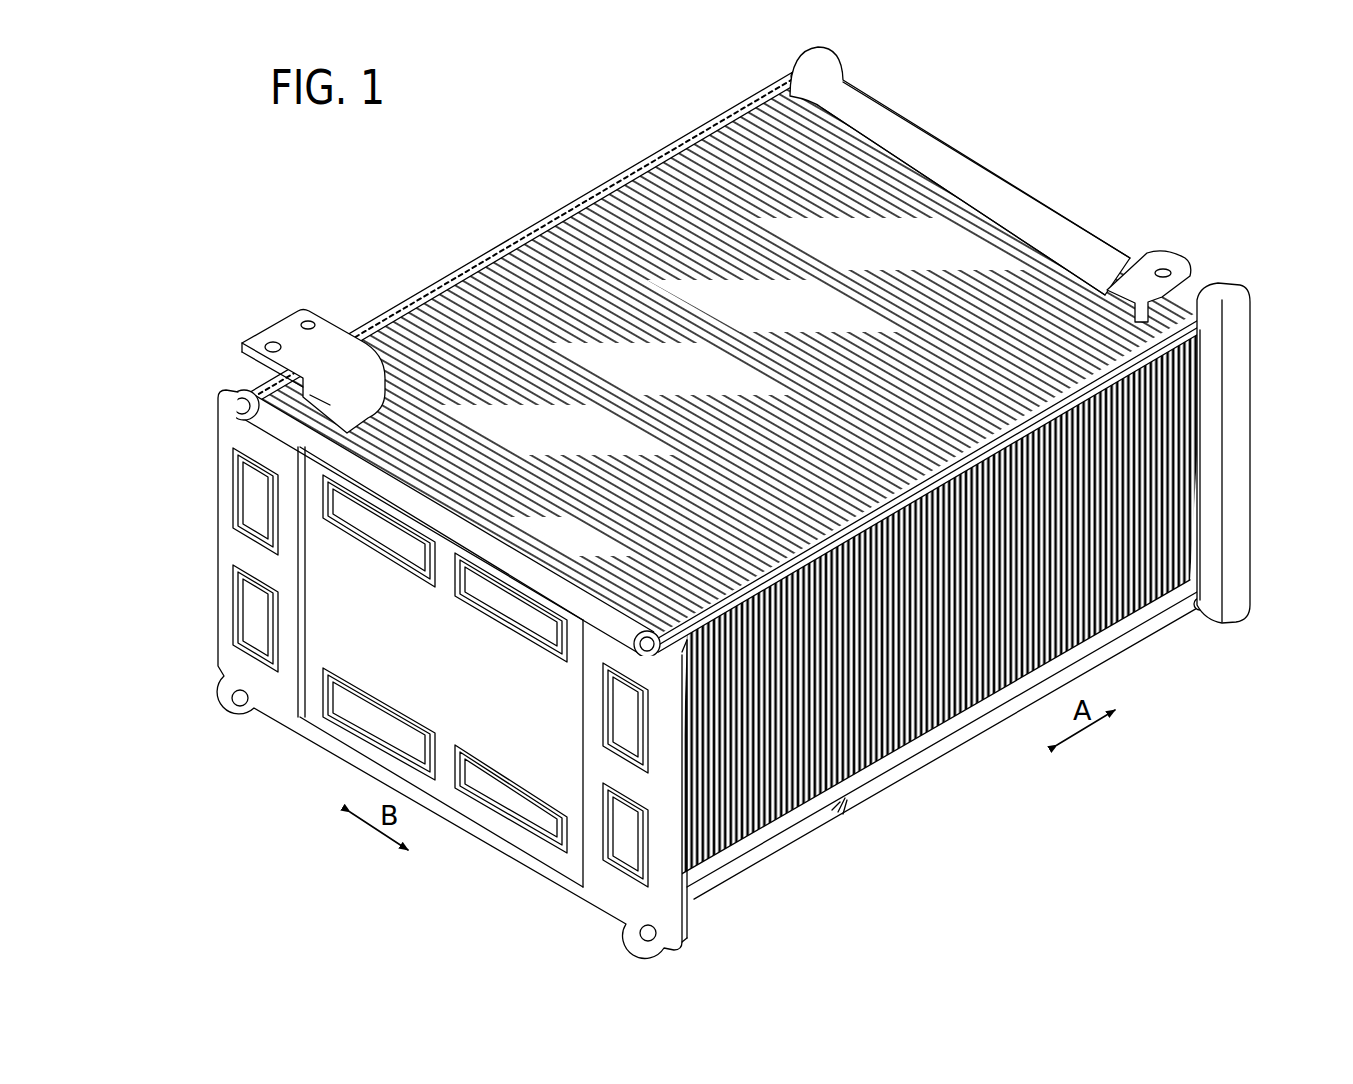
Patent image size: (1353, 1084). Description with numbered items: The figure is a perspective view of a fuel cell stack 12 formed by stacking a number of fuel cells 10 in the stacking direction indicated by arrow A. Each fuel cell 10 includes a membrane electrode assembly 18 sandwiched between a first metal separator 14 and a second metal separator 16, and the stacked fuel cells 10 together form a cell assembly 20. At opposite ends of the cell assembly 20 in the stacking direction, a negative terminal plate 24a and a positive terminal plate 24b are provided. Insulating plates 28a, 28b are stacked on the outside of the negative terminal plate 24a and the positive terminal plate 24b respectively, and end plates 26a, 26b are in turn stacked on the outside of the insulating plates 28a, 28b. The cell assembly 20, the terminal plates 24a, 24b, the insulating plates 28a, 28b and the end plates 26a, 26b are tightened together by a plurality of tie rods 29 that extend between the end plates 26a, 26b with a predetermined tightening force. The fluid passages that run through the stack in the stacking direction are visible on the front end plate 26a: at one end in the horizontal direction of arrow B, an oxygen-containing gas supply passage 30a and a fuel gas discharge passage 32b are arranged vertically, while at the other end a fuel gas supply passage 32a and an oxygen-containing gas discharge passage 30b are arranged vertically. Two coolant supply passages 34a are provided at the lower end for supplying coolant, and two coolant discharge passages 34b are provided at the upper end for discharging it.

The fuel cell 10 is at (855, 892).
The fuel cell stack 12 is at (197, 210).
The first metal separator 14 is at (845, 798).
The second metal separator 16 is at (840, 802).
The membrane electrode assembly 18 is at (847, 800).
The cell assembly 20 is at (613, 92).
The negative terminal plate 24a is at (268, 337).
The positive terminal plate 24b is at (1135, 278).
The end plate 26a is at (425, 674).
The end plate 26b is at (1027, 177).
The insulating plate 28a is at (293, 423).
The insulating plate 28b is at (923, 182).
The tie rod 29 is at (395, 318).
The oxygen-containing gas supply passage 30a is at (265, 502).
The oxygen-containing gas discharge passage 30b is at (628, 808).
The fuel gas supply passage 32a is at (627, 708).
The fuel gas discharge passage 32b is at (256, 608).
The coolant supply passage 34a is at (382, 720).
The coolant discharge passage 34b is at (400, 535).